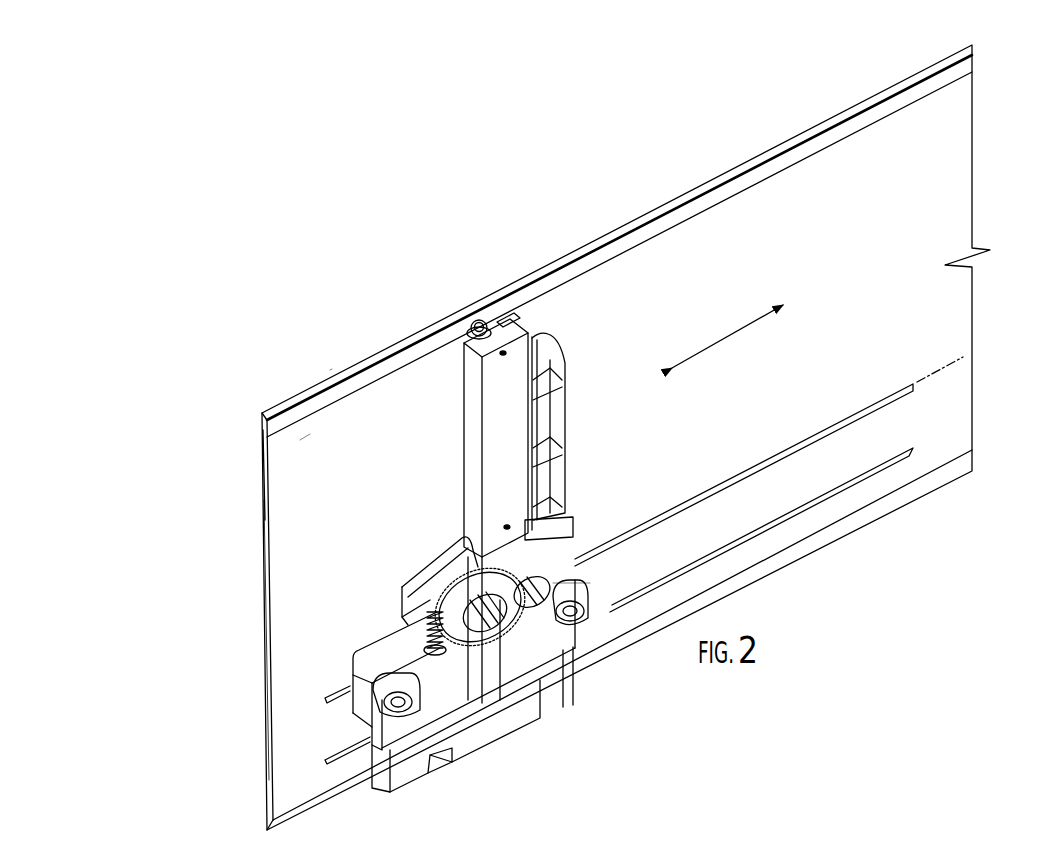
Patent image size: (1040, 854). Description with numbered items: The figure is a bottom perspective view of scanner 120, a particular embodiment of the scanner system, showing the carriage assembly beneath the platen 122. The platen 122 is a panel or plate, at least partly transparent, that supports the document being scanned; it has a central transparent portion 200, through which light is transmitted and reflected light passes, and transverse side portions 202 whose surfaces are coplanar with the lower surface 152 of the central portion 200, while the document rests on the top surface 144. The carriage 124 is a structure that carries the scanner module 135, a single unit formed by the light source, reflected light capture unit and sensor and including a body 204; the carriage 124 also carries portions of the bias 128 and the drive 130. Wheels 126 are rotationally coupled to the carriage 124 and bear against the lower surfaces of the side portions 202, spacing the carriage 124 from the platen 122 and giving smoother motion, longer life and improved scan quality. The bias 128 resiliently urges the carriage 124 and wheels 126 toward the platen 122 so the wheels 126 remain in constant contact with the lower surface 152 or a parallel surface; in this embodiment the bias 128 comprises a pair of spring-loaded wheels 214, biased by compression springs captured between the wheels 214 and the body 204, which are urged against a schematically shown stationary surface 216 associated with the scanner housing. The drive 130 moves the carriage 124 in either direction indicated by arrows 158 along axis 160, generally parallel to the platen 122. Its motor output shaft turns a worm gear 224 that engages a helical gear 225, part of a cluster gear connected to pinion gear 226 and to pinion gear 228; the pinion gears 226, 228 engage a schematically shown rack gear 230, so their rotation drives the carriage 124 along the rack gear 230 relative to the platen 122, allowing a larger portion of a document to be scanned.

The scanner 120 is at (319, 343).
The platen 122 is at (258, 473).
The carriage 124 is at (437, 548).
The wheels 126 is at (472, 318).
The bias 128 is at (592, 604).
The drive 130 is at (430, 572).
The scanner module 135 is at (538, 322).
The top surface 144 is at (258, 447).
The lower surface 152 is at (385, 403).
The arrows 158 is at (727, 335).
The axis 160 is at (962, 357).
The central transparent portion 200 is at (288, 543).
The side portions 202 is at (293, 412).
The body 204 is at (465, 448).
The spring-loaded wheels 214 is at (375, 716).
The stationary surface 216 is at (865, 475).
The worm gear 224 is at (428, 640).
The helical gear 225 is at (446, 596).
The pinion gear 226 is at (505, 622).
The pinion gear 228 is at (542, 606).
The rack gear 230 is at (742, 470).